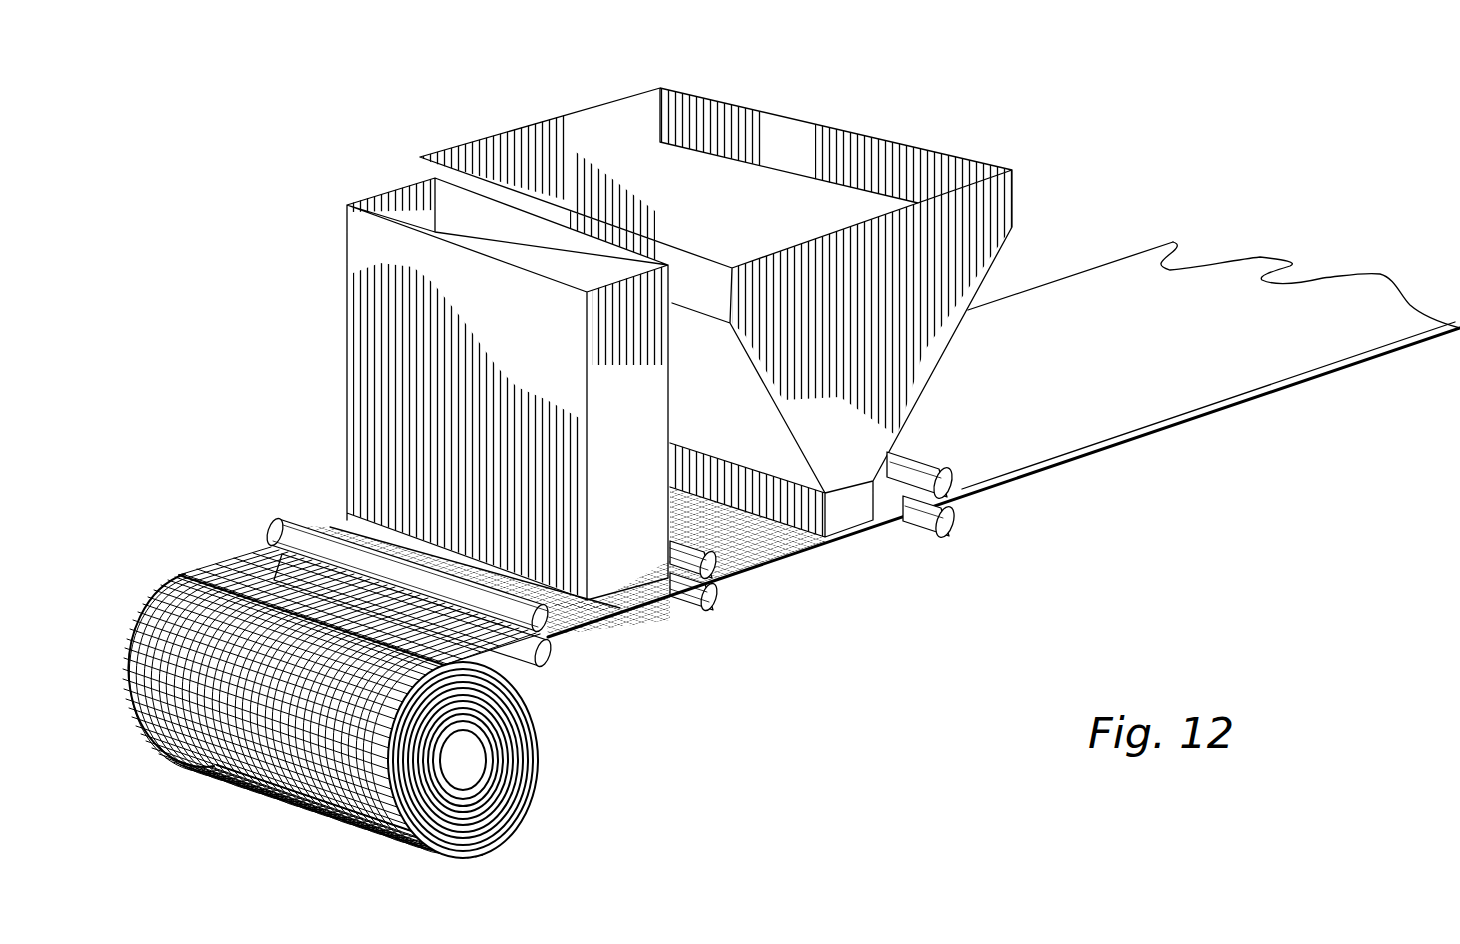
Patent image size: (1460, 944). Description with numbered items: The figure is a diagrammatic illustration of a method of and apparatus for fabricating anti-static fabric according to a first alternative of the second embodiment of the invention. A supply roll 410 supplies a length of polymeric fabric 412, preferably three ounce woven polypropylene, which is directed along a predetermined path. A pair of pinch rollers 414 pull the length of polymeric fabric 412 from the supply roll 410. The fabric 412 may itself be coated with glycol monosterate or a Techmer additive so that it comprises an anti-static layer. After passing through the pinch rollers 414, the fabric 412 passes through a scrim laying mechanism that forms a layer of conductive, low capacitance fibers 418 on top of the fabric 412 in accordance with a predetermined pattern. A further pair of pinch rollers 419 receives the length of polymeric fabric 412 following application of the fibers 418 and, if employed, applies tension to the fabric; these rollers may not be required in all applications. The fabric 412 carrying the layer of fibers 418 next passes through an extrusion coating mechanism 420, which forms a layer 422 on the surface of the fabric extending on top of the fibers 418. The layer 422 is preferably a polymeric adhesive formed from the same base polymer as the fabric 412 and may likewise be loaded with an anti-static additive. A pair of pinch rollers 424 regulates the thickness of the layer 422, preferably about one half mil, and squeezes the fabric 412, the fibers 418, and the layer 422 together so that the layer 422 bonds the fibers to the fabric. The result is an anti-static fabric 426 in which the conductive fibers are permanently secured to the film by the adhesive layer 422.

The supply roll 410 is at (322, 236).
The polymeric fabric 412 is at (612, 626).
The pinch rollers 414 is at (288, 520).
The conductive, low capacitance fibers 418 is at (650, 618).
The pinch rollers 419 is at (717, 602).
The extrusion coating mechanism 420 is at (596, 86).
The layer 422 is at (1075, 418).
The pinch rollers 424 is at (955, 525).
The anti-static fabric 426 is at (1288, 409).